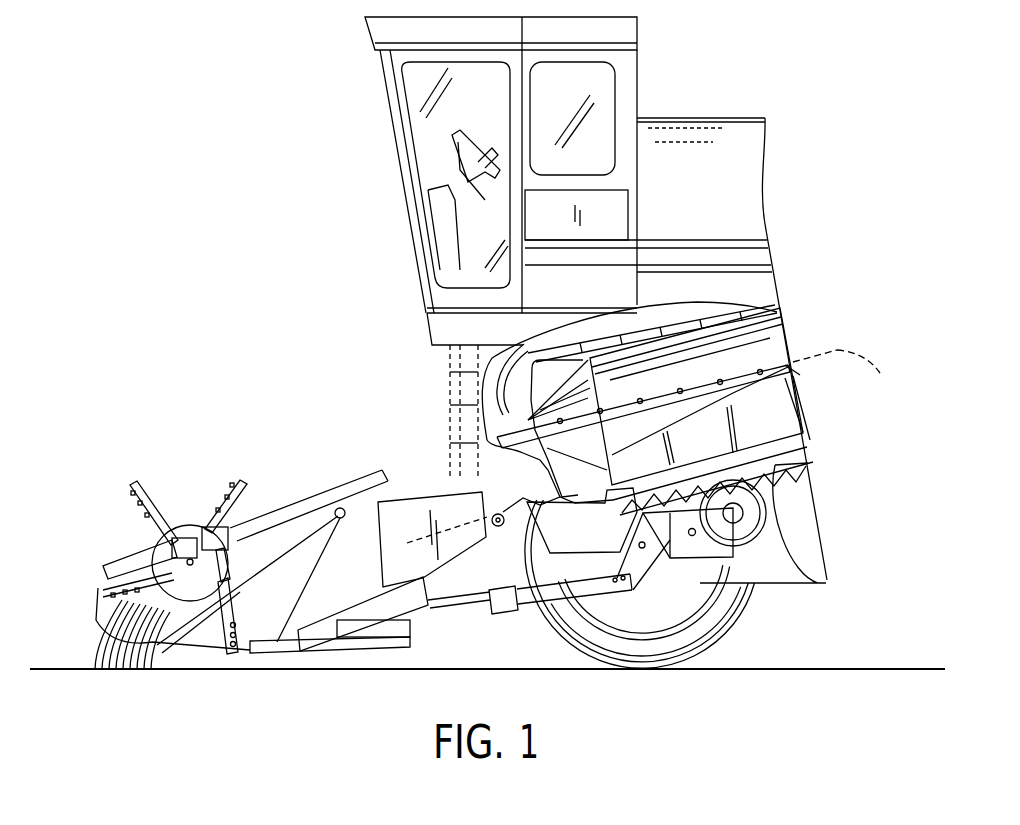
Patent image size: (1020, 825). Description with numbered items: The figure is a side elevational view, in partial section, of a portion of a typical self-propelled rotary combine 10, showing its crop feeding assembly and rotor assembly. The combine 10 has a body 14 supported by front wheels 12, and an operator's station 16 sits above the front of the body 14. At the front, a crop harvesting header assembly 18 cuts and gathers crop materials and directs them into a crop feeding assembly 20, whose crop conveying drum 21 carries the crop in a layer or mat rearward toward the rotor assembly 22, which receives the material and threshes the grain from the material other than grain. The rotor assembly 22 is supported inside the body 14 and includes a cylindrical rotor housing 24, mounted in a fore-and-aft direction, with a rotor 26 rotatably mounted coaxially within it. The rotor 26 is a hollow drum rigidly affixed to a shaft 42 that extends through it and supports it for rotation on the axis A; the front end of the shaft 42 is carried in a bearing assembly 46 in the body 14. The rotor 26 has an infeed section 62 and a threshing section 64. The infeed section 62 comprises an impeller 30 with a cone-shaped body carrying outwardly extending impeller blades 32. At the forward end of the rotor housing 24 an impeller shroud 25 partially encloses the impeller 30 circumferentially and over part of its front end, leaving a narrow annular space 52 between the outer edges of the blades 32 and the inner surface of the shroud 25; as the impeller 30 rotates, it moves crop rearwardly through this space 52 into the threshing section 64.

The self-propelled rotary combine 10 is at (386, 134).
The front wheels 12 is at (730, 620).
The body 14 is at (748, 205).
The operator's station 16 is at (413, 85).
The crop harvesting header assembly 18 is at (193, 506).
The crop feeding assembly 20 is at (405, 478).
The crop conveying drum 21 is at (500, 530).
The rotor assembly 22 is at (800, 330).
The cylindrical rotor housing 24 is at (750, 312).
The impeller shroud 25 is at (580, 400).
The rotor 26 is at (790, 363).
The impeller 30 is at (557, 427).
The impeller blades 32 is at (567, 478).
The shaft 42 is at (803, 413).
The bearing assembly 46 is at (520, 447).
The annular space 52 is at (552, 357).
The infeed section 62 is at (528, 420).
The threshing section 64 is at (702, 375).
The axis A is at (846, 369).